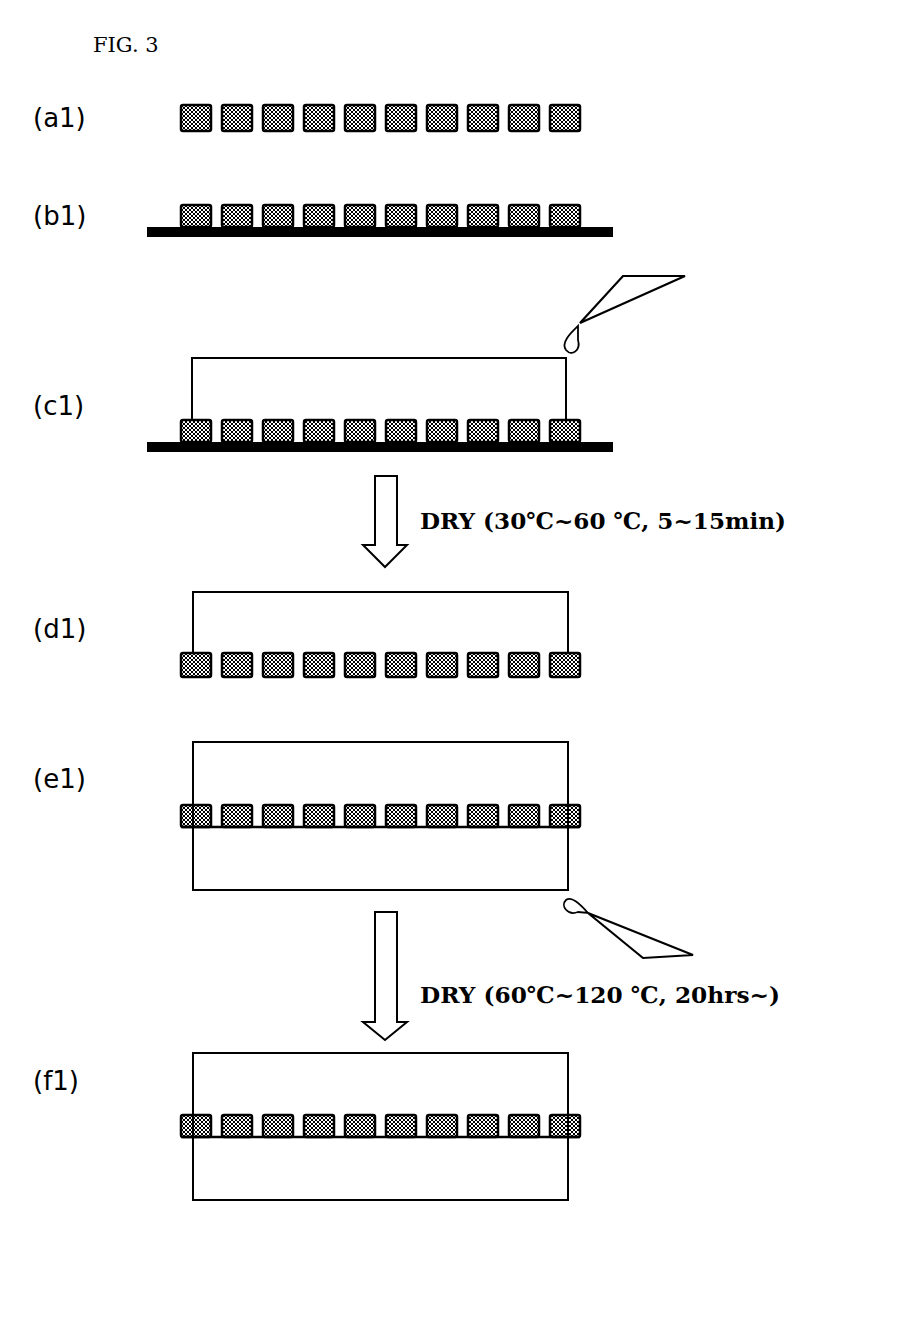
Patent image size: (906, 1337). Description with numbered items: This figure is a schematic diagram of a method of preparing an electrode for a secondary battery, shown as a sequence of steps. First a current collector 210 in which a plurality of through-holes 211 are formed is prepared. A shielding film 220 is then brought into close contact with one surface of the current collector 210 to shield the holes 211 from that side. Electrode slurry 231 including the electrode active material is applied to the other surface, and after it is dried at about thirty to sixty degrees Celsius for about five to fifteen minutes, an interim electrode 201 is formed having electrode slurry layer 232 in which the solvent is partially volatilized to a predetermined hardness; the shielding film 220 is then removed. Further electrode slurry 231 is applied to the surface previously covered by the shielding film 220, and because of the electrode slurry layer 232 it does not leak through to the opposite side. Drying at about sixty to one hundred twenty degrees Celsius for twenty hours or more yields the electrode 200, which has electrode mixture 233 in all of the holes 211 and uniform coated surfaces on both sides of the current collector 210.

The electrode 200 is at (431, 1082).
The interim electrode 201 is at (432, 665).
The current collector 210 is at (566, 96).
The through-holes 211 is at (500, 118).
The shielding film 220 is at (588, 238).
The electrode slurry 231 is at (553, 372).
The electrode slurry layer 232 is at (555, 603).
The electrode mixture 233 is at (555, 1068).